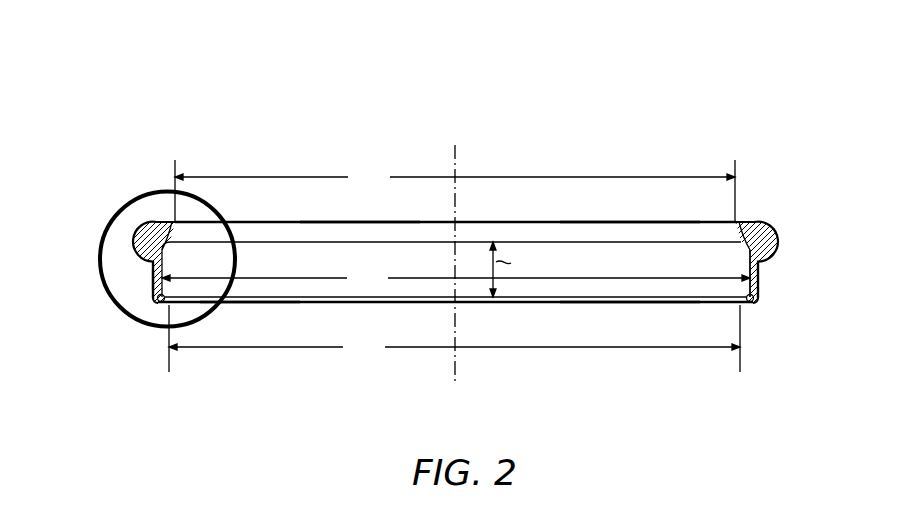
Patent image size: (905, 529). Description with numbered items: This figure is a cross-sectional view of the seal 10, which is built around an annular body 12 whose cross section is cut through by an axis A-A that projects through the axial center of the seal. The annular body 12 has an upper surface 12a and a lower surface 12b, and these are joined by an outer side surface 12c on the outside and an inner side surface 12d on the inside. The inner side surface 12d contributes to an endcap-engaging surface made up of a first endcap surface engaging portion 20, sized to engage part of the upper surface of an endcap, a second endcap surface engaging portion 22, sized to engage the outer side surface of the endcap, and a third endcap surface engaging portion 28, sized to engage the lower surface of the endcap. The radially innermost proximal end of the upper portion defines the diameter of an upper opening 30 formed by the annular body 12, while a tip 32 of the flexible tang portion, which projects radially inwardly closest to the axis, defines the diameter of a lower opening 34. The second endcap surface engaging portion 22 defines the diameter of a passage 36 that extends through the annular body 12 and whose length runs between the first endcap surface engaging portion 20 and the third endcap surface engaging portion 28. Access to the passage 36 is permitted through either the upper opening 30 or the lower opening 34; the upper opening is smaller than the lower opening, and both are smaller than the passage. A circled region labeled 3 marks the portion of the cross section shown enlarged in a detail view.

The seal 10 is at (273, 98).
The detail circle of FIG. 3 is at (154, 192).
The annular body 12 is at (136, 284).
The upper surface 12a is at (590, 222).
The lower surface 12b is at (590, 302).
The outer side surface 12c is at (756, 278).
The inner side surface 12d is at (752, 256).
The first endcap surface engaging portion 20 is at (180, 251).
The second endcap surface engaging portion 22 is at (150, 263).
The third endcap surface engaging portion 28 is at (752, 300).
The upper opening 30 is at (333, 214).
The tip 32 is at (158, 296).
The lower opening 34 is at (243, 314).
The passage 36 is at (567, 258).